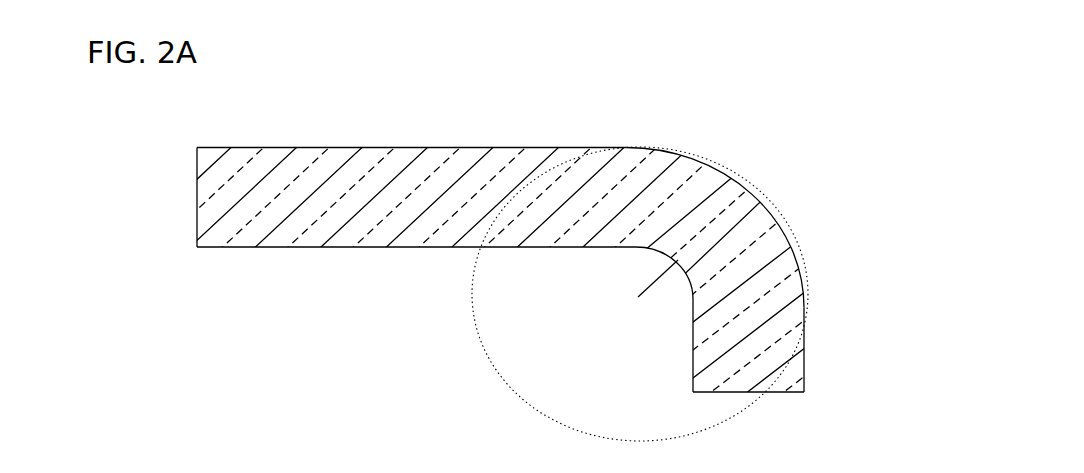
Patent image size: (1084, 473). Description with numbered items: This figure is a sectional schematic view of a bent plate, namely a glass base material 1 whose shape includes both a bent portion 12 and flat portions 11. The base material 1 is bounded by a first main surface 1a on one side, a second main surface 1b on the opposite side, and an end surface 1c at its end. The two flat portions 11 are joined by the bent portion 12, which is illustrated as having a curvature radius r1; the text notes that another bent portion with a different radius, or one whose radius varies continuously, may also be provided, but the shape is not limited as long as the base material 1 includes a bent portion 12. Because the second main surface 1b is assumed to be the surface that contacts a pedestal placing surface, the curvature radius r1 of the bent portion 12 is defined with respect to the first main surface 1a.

The base material 1 is at (755, 119).
The first main surface 1a is at (372, 148).
The second main surface 1b is at (368, 248).
The end surface 1c is at (717, 392).
The flat portion 11 is at (513, 258).
The bent portion 12 is at (638, 317).
The curvature radius r1 is at (645, 295).